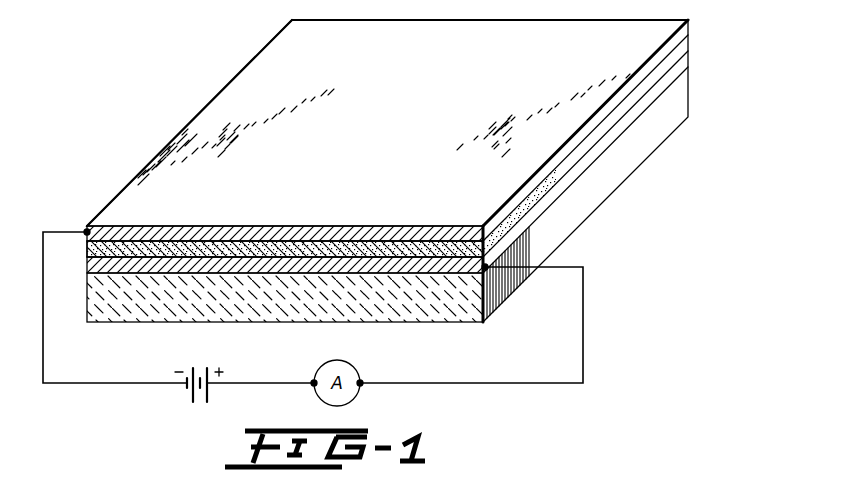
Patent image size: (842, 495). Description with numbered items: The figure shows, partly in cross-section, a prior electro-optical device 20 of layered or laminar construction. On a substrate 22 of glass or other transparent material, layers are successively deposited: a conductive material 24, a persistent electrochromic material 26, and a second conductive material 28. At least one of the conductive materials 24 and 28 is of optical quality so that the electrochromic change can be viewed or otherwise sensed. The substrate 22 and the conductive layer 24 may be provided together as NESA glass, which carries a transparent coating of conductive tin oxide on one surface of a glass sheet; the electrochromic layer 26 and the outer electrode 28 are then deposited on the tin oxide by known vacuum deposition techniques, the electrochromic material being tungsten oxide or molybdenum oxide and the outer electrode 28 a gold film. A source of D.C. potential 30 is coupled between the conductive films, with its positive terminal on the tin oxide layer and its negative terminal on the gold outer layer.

The device 20 is at (677, 149).
The substrate 22 is at (442, 313).
The conductive material 24 is at (98, 267).
The persistent electrochromic material 26 is at (413, 245).
The second conductive material 28 is at (277, 232).
The source of D.C. potential 30 is at (188, 398).